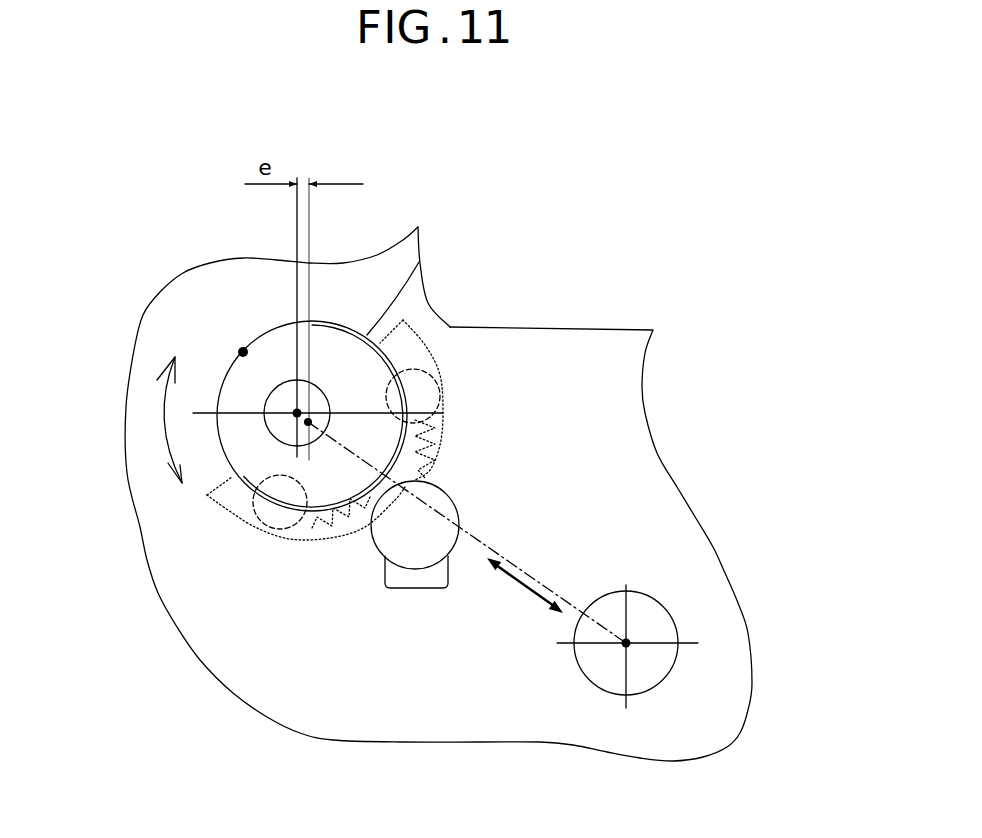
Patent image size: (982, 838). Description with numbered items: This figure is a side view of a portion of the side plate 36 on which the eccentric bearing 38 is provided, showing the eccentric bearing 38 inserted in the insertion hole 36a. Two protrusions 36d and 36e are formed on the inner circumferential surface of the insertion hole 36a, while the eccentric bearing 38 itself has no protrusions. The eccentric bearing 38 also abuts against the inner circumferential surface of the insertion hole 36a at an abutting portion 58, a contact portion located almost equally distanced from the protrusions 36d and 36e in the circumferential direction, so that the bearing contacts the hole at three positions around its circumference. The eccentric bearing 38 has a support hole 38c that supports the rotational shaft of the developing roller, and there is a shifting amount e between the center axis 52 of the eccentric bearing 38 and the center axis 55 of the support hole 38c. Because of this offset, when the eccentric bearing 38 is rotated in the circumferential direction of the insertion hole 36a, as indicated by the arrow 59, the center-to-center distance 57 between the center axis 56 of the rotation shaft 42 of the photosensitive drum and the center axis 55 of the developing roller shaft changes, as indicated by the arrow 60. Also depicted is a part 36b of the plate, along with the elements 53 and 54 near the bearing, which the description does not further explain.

The side plate 36 is at (587, 329).
The insertion hole 36a is at (415, 270).
The roller support 36b is at (415, 590).
The protrusion 36d is at (398, 398).
The protrusion 36e is at (279, 492).
The eccentric bearing 38 is at (375, 441).
The support hole 38c is at (297, 413).
The rotation shaft 42 is at (670, 610).
The center axis 52 is at (308, 422).
The spring roller 53 is at (425, 372).
The spring roller 54 is at (297, 533).
The center axis 55 is at (297, 413).
The center axis 56 is at (626, 643).
The center-to-center distance 57 is at (555, 590).
The abutting portion 58 is at (243, 352).
The arrow 59 is at (162, 422).
The arrow 60 is at (520, 583).